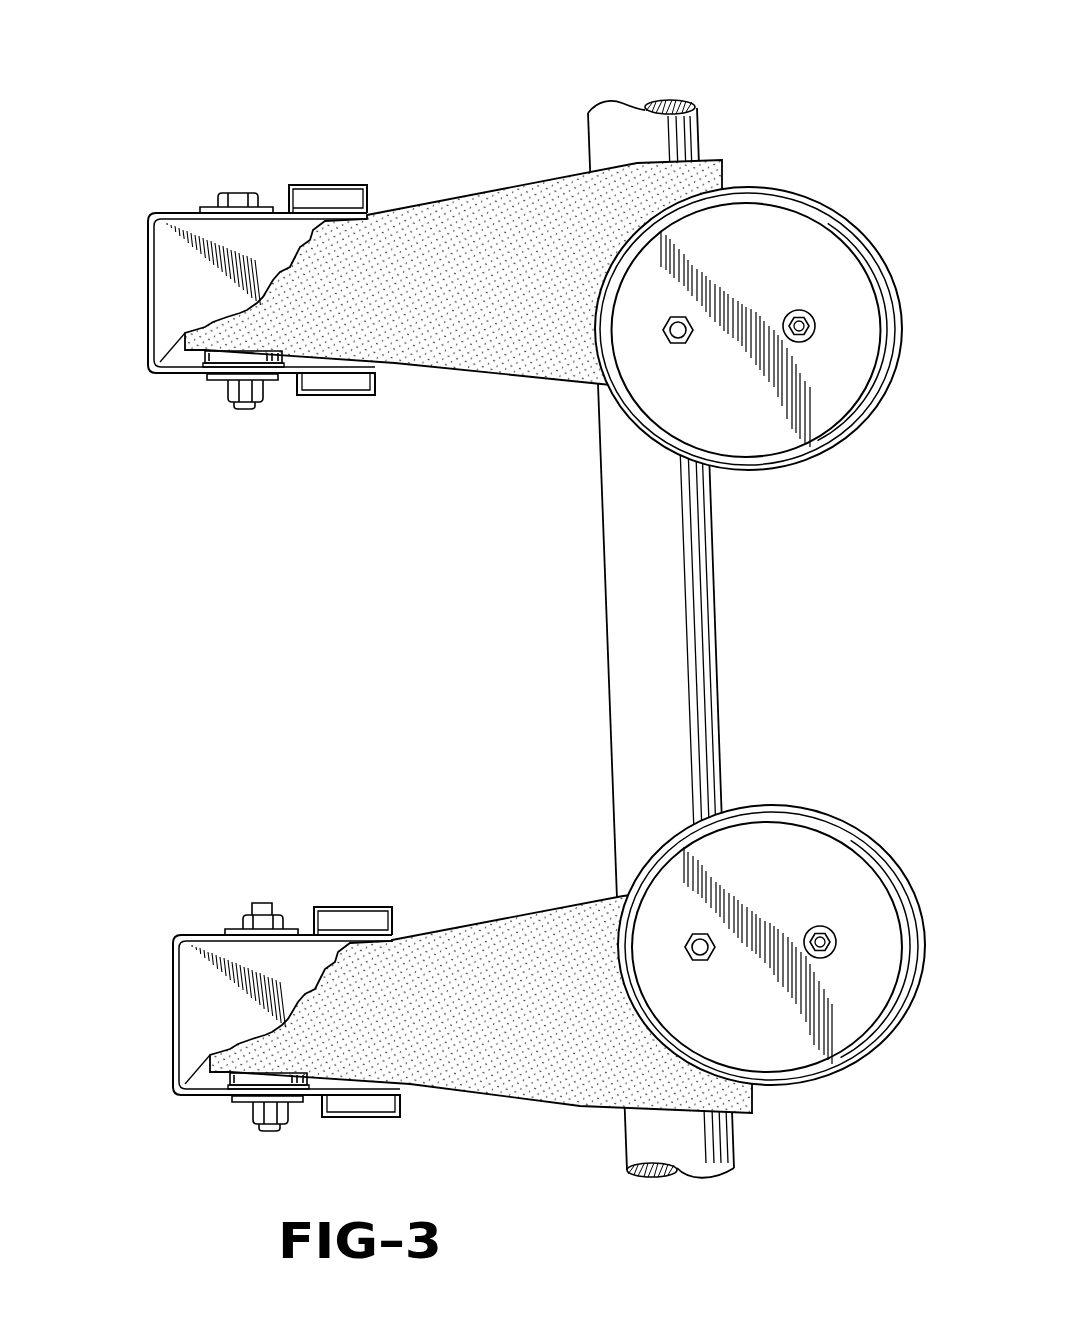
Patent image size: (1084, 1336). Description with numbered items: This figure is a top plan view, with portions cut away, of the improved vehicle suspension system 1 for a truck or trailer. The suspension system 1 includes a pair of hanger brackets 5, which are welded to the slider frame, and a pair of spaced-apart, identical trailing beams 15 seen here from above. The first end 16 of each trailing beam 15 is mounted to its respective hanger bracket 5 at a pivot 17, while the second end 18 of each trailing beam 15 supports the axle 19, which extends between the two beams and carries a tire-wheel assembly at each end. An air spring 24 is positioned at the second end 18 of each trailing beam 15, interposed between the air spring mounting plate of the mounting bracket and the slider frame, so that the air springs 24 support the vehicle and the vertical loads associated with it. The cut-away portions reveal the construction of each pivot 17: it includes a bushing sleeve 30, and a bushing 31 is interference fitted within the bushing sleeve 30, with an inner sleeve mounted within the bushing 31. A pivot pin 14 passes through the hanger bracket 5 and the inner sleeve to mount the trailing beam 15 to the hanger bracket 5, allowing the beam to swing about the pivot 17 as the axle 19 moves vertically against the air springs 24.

The vehicle suspension system 1 is at (800, 41).
The hanger bracket 5 is at (170, 272).
The pivot pin 14 is at (244, 201).
The trailing beam 15 is at (441, 201).
The first end 16 is at (196, 368).
The pivot 17 is at (219, 384).
The second end 18 is at (672, 639).
The axle 19 is at (620, 644).
The air spring 24 is at (808, 212).
The bushing sleeve 30 is at (228, 356).
The bushing 31 is at (268, 366).